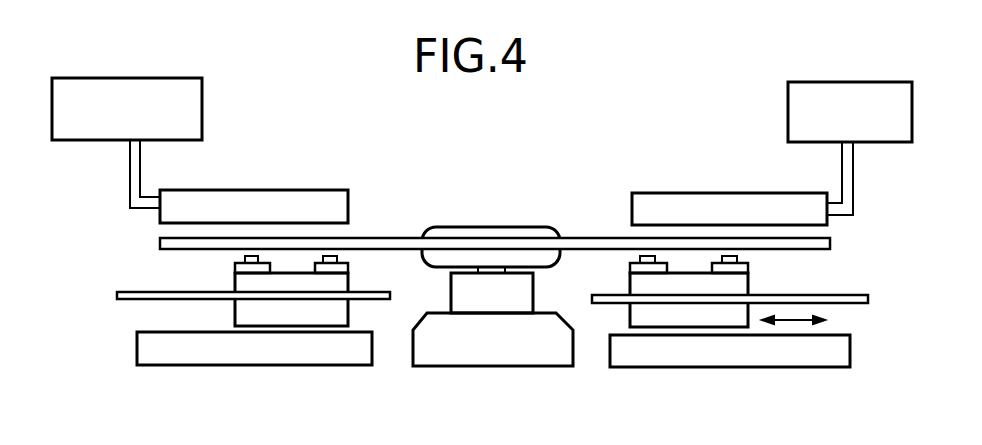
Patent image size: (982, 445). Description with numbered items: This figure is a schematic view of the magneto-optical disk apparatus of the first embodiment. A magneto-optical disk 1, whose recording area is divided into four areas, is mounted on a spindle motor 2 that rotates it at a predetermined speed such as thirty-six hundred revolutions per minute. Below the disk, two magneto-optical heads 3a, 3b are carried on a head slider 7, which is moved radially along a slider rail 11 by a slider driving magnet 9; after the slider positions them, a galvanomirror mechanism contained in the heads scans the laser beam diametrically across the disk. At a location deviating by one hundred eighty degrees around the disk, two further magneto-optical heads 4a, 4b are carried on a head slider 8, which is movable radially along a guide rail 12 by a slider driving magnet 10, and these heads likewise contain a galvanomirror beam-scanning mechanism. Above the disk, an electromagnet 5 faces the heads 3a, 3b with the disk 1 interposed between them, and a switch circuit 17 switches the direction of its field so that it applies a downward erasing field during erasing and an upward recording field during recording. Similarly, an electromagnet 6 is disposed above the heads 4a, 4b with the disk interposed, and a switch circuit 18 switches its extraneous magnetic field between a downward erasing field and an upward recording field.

The magneto-optical disk 1 is at (587, 240).
The spindle motor 2 is at (497, 355).
The magneto-optical head 3a is at (748, 268).
The magneto-optical head 3b is at (630, 268).
The magneto-optical head 4a is at (235, 266).
The magneto-optical head 4b is at (348, 266).
The electromagnet 5 is at (722, 197).
The electromagnet 6 is at (275, 197).
The head slider 7 is at (700, 320).
The head slider 8 is at (282, 316).
The slider driving magnet 9 is at (665, 358).
The slider driving magnet 10 is at (320, 352).
The slider rail 11 is at (847, 293).
The guide rail 12 is at (130, 300).
The switch circuit 17 is at (788, 113).
The switch circuit 18 is at (202, 108).